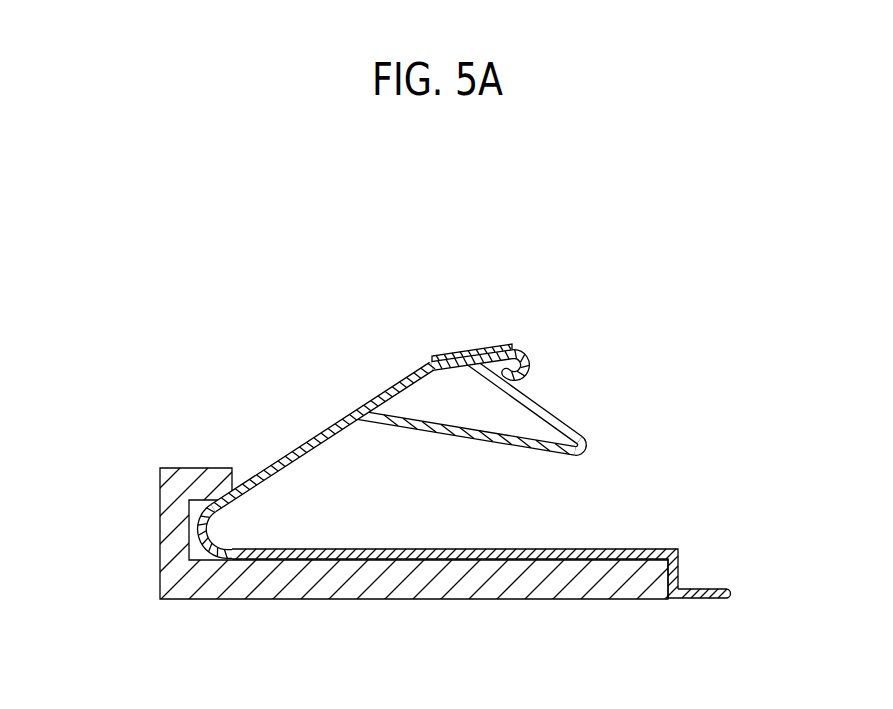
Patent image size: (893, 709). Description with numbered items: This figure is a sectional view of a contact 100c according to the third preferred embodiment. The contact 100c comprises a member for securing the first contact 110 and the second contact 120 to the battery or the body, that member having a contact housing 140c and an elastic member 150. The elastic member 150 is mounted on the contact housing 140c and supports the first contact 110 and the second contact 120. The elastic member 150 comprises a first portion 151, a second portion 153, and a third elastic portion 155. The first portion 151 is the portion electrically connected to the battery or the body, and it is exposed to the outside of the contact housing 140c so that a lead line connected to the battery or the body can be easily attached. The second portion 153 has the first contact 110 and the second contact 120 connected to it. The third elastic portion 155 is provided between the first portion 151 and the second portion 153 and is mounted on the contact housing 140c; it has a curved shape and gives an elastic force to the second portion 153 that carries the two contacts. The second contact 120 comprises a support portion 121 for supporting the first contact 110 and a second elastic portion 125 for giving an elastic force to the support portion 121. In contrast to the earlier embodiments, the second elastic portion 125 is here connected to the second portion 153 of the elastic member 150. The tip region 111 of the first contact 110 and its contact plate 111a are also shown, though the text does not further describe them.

The contact 100c is at (318, 242).
The first contact 110 is at (319, 406).
The contact tip portion 111 is at (527, 358).
The contact plate 111a is at (471, 347).
The second contact 120 is at (545, 399).
The support portion 121 is at (542, 393).
The second elastic portion 125 is at (588, 446).
The contact housing 140c is at (302, 590).
The elastic member 150 is at (481, 614).
The first portion 151 is at (700, 598).
The second portion 153 is at (307, 442).
The third elastic portion 155 is at (203, 526).